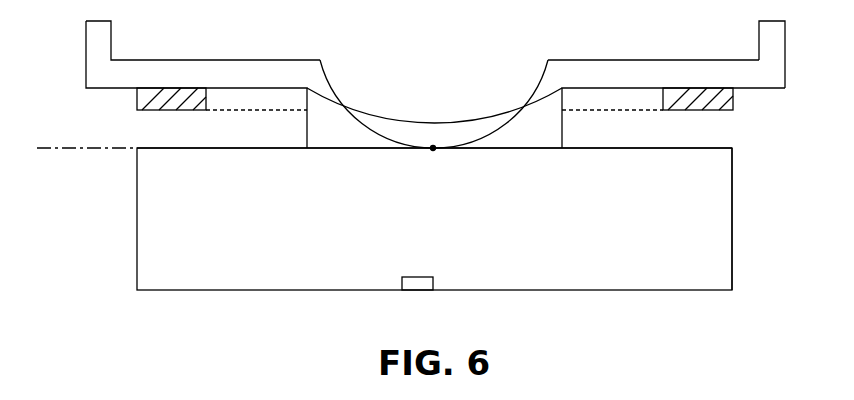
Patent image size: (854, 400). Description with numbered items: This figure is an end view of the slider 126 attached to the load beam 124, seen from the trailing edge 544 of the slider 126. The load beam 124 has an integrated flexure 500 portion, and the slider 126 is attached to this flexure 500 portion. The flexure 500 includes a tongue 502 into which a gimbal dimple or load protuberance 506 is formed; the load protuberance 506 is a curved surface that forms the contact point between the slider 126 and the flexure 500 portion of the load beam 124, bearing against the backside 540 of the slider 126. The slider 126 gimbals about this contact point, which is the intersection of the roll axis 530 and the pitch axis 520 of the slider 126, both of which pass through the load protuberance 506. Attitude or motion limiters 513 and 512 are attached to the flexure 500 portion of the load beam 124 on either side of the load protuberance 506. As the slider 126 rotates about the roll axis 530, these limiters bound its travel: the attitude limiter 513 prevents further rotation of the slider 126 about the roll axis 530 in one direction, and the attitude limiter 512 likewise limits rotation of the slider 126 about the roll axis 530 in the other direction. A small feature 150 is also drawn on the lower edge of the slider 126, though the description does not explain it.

The flexure 500 is at (631, 67).
The load beam 124 is at (775, 42).
The tongue 502 is at (328, 123).
The load protuberance 506 is at (518, 126).
The attitude limiter 513 is at (160, 111).
The attitude limiter 512 is at (705, 112).
The pitch axis 520 is at (68, 150).
The slider 126 is at (720, 260).
The backside 540 is at (710, 148).
The trailing edge 544 is at (718, 212).
The roll axis 530 is at (433, 150).
The alignment feature 150 is at (417, 283).